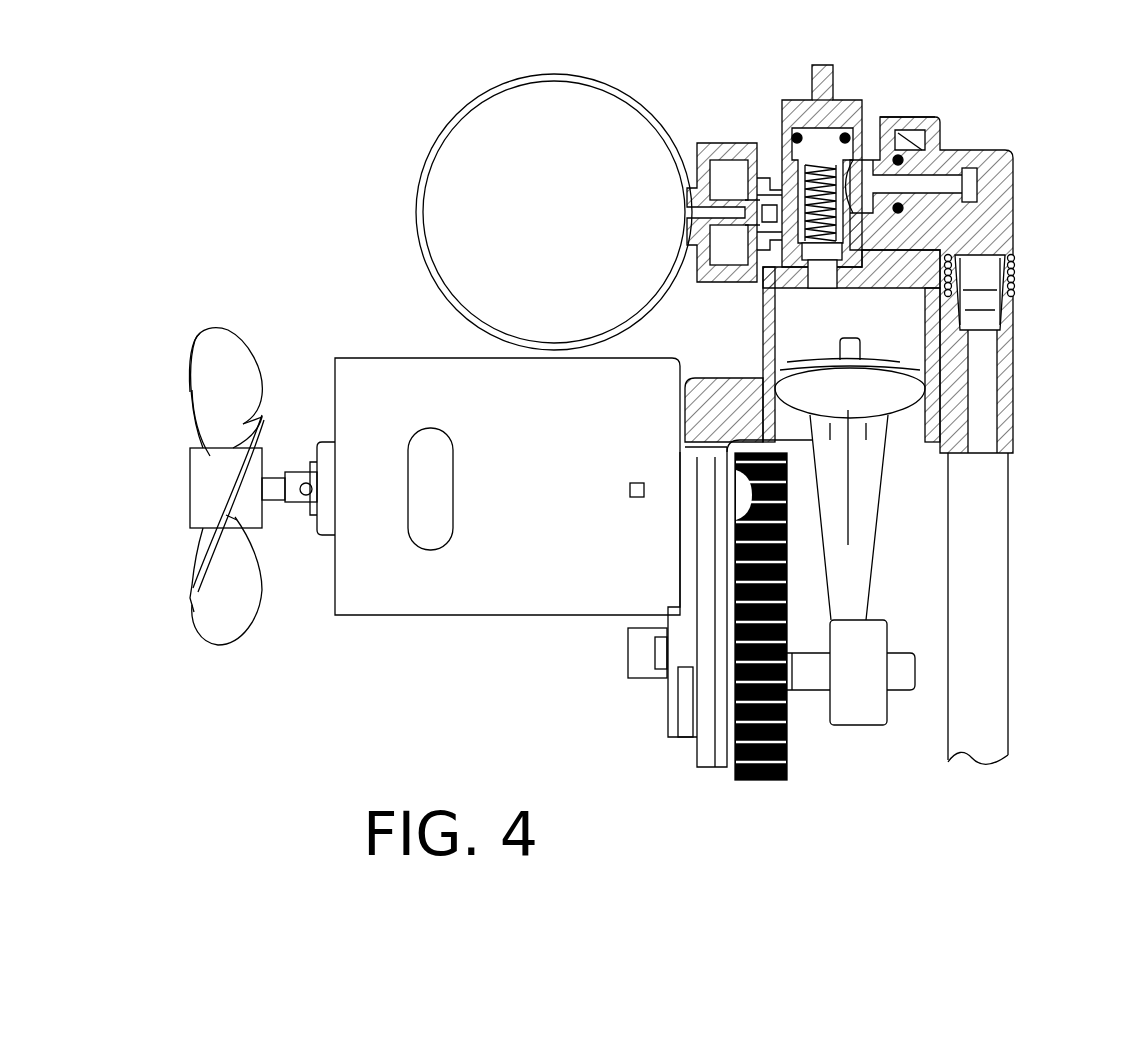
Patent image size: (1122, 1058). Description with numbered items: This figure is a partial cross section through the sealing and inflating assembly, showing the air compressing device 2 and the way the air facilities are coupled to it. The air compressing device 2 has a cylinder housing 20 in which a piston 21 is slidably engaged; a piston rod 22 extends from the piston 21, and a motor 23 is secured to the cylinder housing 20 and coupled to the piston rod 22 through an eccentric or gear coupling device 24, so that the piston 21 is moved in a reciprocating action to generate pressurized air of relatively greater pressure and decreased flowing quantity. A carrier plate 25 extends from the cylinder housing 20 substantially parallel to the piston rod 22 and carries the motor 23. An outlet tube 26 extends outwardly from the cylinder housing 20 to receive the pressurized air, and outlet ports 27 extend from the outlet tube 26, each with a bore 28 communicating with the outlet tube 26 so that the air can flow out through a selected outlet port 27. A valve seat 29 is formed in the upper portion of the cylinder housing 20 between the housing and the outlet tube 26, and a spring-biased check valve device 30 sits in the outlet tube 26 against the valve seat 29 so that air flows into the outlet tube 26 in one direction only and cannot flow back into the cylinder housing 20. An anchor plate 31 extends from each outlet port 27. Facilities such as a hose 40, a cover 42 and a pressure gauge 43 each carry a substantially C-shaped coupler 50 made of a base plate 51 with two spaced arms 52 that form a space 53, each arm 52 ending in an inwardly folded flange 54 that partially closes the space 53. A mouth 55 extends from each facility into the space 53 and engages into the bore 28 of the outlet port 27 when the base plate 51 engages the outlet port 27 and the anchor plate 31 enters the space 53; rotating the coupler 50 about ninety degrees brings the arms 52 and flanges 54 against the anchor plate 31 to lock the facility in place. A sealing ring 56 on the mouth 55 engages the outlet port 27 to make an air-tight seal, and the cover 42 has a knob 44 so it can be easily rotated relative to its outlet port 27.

The air compressing device 2 is at (486, 632).
The cylinder housing 20 is at (930, 373).
The piston 21 is at (902, 432).
The piston rod 22 is at (863, 712).
The motor 23 is at (377, 600).
The gear coupling device 24 is at (749, 800).
The carrier plate 25 is at (685, 718).
The outlet tube 26 is at (780, 150).
The outlet port 27 is at (865, 262).
The bore 28 is at (860, 165).
The valve seat 29 is at (850, 290).
The spring-biased check valve device 30 is at (852, 248).
The anchor plate 31 is at (745, 160).
The hose 40 is at (995, 688).
The cover 42 is at (809, 89).
The pressure gauge 43 is at (452, 228).
The knob 44 is at (826, 68).
The coupler 50 is at (912, 105).
The base plate 51 is at (707, 245).
The arm 52 is at (925, 125).
The space 53 is at (697, 150).
The flange 54 is at (752, 148).
The mouth 55 is at (907, 200).
The sealing ring 56 is at (905, 160).